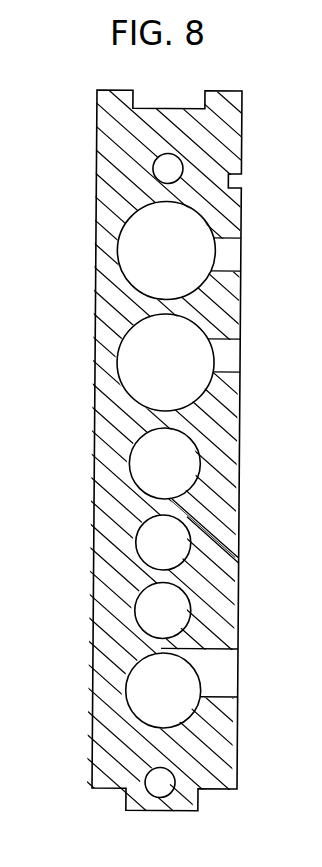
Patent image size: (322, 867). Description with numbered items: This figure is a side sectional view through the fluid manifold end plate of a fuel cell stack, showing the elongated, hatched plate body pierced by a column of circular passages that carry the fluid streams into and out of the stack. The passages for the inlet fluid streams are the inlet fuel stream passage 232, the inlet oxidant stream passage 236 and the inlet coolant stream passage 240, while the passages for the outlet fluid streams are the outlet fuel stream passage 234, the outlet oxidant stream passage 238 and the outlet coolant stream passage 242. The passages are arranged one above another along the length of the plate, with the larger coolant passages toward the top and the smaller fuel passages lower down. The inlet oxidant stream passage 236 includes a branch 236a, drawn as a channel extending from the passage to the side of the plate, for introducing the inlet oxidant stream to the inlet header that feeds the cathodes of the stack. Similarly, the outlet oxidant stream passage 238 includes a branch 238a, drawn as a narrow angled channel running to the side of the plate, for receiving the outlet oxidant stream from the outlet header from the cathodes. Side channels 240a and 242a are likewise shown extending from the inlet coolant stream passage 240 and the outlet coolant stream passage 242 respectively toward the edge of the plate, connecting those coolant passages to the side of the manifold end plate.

The outlet coolant stream passage 242 is at (133, 248).
The port 242a is at (233, 250).
The inlet coolant stream passage 240 is at (130, 372).
The port 240a is at (230, 346).
The outlet oxidant stream passage 238 is at (143, 468).
The branch 238a is at (222, 492).
The outlet fuel stream passage 234 is at (148, 547).
The inlet fuel stream passage 232 is at (148, 615).
The inlet oxidant stream passage 236 is at (142, 697).
The branch 236a is at (218, 672).